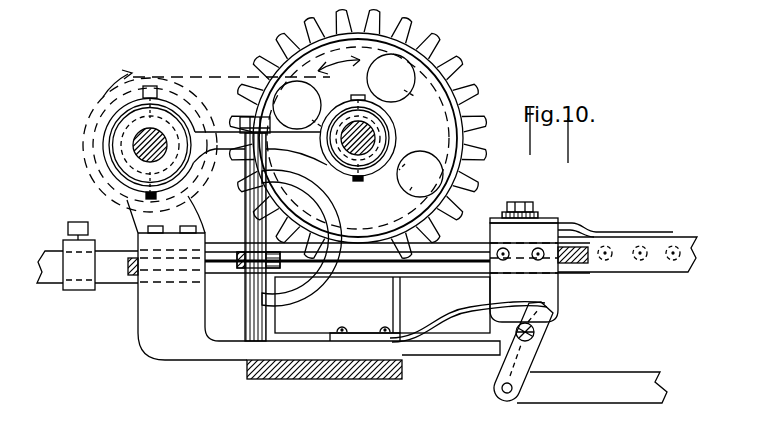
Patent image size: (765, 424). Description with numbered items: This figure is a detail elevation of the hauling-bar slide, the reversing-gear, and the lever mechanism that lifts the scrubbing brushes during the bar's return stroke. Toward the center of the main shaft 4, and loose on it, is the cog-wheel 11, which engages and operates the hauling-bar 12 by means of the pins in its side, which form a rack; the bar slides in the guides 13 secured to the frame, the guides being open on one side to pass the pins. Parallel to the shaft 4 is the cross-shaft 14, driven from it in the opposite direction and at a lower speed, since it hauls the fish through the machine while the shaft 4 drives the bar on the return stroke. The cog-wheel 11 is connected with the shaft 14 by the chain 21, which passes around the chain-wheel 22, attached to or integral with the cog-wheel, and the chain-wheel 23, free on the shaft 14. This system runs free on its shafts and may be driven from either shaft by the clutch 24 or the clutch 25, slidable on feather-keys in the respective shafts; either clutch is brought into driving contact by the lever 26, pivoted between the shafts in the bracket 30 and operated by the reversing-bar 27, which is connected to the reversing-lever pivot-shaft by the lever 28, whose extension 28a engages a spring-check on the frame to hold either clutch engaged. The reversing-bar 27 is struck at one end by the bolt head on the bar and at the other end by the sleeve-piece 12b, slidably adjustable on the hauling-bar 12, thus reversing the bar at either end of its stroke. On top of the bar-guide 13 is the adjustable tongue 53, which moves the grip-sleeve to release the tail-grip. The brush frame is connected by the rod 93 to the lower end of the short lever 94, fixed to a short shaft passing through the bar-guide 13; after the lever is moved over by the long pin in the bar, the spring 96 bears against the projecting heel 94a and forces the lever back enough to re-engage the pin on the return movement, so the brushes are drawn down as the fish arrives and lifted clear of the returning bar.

The shaft 4 is at (376, 137).
The cog-wheel 11 is at (487, 154).
The hauling-bar 12 is at (50, 256).
The sleeve-piece 12b is at (79, 256).
The guides 13 is at (558, 198).
The cross-shaft 14 is at (133, 145).
The chain 21 is at (224, 79).
The chain-wheel 22 is at (389, 92).
The chain-wheel 23 is at (110, 118).
The clutch 24 is at (393, 141).
The clutch 25 is at (124, 158).
The lever 26 is at (226, 145).
The reversing-bar 27 is at (465, 243).
The lever 28 is at (283, 248).
The extension of lever 28 28a is at (246, 273).
The bracket 30 is at (330, 280).
The tongue 53 is at (597, 228).
The rod 93 is at (592, 387).
The short lever 94 is at (503, 378).
The projecting heel 94a is at (544, 313).
The spring 96 is at (482, 306).